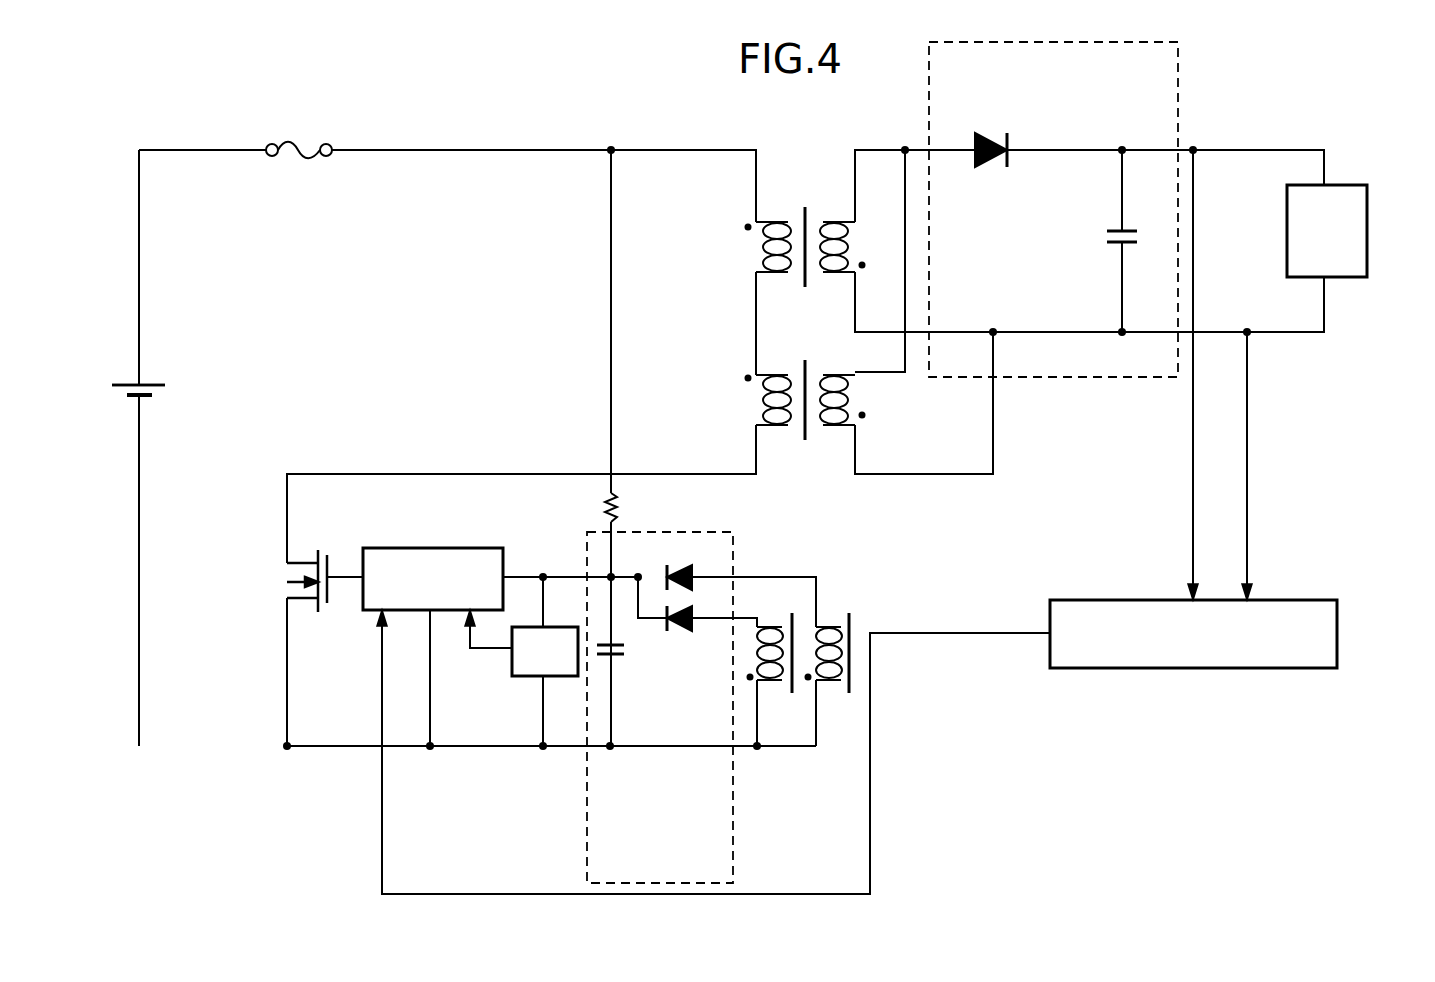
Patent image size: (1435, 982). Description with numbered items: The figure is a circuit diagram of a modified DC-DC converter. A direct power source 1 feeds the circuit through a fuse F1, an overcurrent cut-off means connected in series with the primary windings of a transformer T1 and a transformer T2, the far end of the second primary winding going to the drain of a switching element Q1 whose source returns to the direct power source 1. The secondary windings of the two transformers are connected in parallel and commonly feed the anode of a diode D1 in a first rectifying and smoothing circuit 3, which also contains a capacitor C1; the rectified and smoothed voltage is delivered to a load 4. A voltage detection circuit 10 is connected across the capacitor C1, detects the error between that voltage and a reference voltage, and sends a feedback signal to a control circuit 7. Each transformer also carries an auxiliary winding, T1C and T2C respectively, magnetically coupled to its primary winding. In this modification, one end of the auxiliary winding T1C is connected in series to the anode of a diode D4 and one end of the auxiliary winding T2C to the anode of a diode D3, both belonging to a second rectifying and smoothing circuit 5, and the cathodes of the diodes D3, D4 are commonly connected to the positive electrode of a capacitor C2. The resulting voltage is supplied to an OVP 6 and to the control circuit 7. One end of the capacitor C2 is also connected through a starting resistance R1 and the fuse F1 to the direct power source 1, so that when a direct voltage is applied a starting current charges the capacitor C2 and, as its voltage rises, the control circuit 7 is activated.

The direct power source 1 is at (152, 391).
The first rectifying and smoothing circuit 3 is at (1080, 205).
The load 4 is at (1367, 210).
The second rectifying and smoothing circuit 5 is at (685, 707).
The OVP (overvoltage detection circuit) 6 is at (512, 670).
The control circuit 7 is at (477, 548).
The voltage detection circuit 10 is at (1108, 600).
The fuse F1 is at (299, 136).
The switching element Q1 is at (285, 581).
The transformer T1 is at (804, 205).
The transformer T2 is at (804, 370).
The auxiliary winding T1C is at (770, 688).
The auxiliary winding T2C is at (838, 615).
The diode D1 is at (991, 166).
The capacitor C1 is at (1105, 238).
The starting resistance R1 is at (626, 507).
The diode D3 is at (679, 564).
The diode D4 is at (679, 635).
The capacitor C2 is at (624, 659).